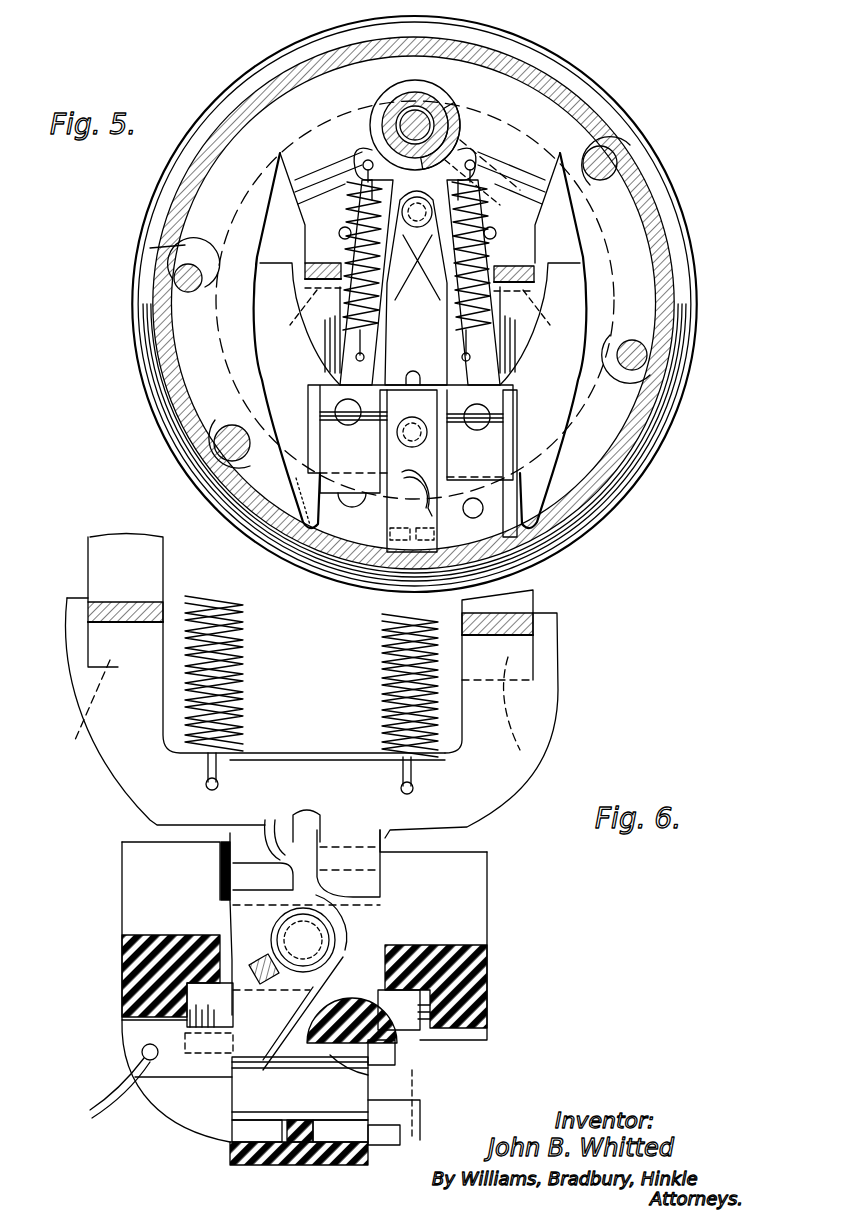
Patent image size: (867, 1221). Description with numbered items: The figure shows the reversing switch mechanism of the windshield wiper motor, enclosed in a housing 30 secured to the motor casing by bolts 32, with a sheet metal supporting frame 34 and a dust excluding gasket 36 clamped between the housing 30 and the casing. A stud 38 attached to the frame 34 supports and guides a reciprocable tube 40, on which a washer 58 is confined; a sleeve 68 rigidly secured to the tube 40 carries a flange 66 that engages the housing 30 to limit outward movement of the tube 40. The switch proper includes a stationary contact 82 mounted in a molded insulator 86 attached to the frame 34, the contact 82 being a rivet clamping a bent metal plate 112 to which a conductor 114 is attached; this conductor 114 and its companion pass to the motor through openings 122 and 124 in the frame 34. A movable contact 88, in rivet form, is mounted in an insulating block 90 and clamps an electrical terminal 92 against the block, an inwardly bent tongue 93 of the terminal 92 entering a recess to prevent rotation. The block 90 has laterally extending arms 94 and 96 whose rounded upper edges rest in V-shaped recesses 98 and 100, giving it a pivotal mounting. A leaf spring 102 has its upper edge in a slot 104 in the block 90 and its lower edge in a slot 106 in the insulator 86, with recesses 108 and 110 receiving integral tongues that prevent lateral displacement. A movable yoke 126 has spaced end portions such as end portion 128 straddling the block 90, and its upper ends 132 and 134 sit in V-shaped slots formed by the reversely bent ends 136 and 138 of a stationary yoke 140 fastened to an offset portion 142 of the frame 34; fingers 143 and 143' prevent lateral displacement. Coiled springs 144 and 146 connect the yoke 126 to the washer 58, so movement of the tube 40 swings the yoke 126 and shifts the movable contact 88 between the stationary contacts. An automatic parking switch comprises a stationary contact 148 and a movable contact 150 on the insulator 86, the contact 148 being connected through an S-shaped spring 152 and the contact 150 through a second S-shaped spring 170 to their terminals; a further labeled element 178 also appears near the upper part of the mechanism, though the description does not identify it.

In FIG. 5, the housing 30 is at (640, 232).
In FIG. 5, the bolts 32 is at (618, 158).
In FIG. 5, the supporting frame 34 is at (662, 268).
In FIG. 5, the dust excluding gasket 36 is at (298, 524).
In FIG. 6, the dust excluding gasket 36 is at (262, 545).
In FIG. 5, the stud 38 is at (435, 105).
In FIG. 5, the reciprocable tube 40 is at (405, 112).
In FIG. 5, the washer 58 is at (378, 118).
In FIG. 5, the flange 66 is at (468, 140).
In FIG. 5, the sleeve 68 is at (455, 118).
In FIG. 5, the stationary contact 82 is at (362, 440).
In FIG. 5, the molded insulator 86 is at (518, 455).
In FIG. 6, the molded insulator 86 is at (226, 1160).
In FIG. 6, the movable contact 88 is at (290, 935).
In FIG. 6, the insulating block 90 is at (311, 982).
In FIG. 6, the electrical terminal 92 is at (178, 1065).
In FIG. 6, the inwardly bent tongue 93 is at (258, 960).
In FIG. 6, the laterally extending arm 94 is at (205, 1005).
In FIG. 6, the laterally extending arm 96 is at (490, 1013).
In FIG. 6, the V-shaped recess 98 is at (200, 965).
In FIG. 6, the V-shaped recess 100 is at (490, 975).
In FIG. 6, the leaf spring 102 is at (314, 1070).
In FIG. 6, the slot 104 is at (395, 1065).
In FIG. 6, the slot 106 is at (372, 1150).
In FIG. 6, the recess 108 is at (340, 1060).
In FIG. 6, the recess 110 is at (300, 1165).
In FIG. 5, the bent metal plate 112 is at (440, 440).
In FIG. 5, the conductor 114 is at (560, 522).
In FIG. 5, the opening 122 is at (185, 250).
In FIG. 5, the opening 124 is at (690, 368).
In FIG. 5, the movable yoke 126 is at (525, 318).
In FIG. 6, the movable yoke 126 is at (532, 715).
In FIG. 6, the end portion 128 is at (365, 885).
In FIG. 6, the upper end 132 is at (100, 640).
In FIG. 6, the upper end 134 is at (558, 640).
In FIG. 5, the reversely bent end 136 is at (322, 265).
In FIG. 6, the reversely bent end 136 is at (115, 600).
In FIG. 5, the reversely bent end 138 is at (515, 270).
In FIG. 6, the reversely bent end 138 is at (520, 622).
In FIG. 5, the stationary yoke 140 is at (286, 318).
In FIG. 6, the stationary yoke 140 is at (546, 762).
In FIG. 5, the offset portion 142 is at (335, 183).
In FIG. 5, the finger 143 is at (426, 228).
In FIG. 6, the finger 143 is at (42, 606).
In FIG. 5, the finger 143' is at (702, 294).
In FIG. 6, the finger 143' is at (616, 606).
In FIG. 5, the coiled spring 144 is at (383, 290).
In FIG. 6, the coiled spring 144 is at (248, 692).
In FIG. 5, the coiled spring 146 is at (447, 300).
In FIG. 6, the coiled spring 146 is at (372, 660).
In FIG. 5, the stationary contact 148 is at (355, 357).
In FIG. 5, the movable contact 150 is at (490, 355).
In FIG. 6, the movable contact 150 is at (266, 838).
In FIG. 5, the S-shaped spring 152 is at (320, 452).
In FIG. 5, the S-shaped spring 170 is at (475, 492).
In FIG. 5, the link 178 is at (478, 180).